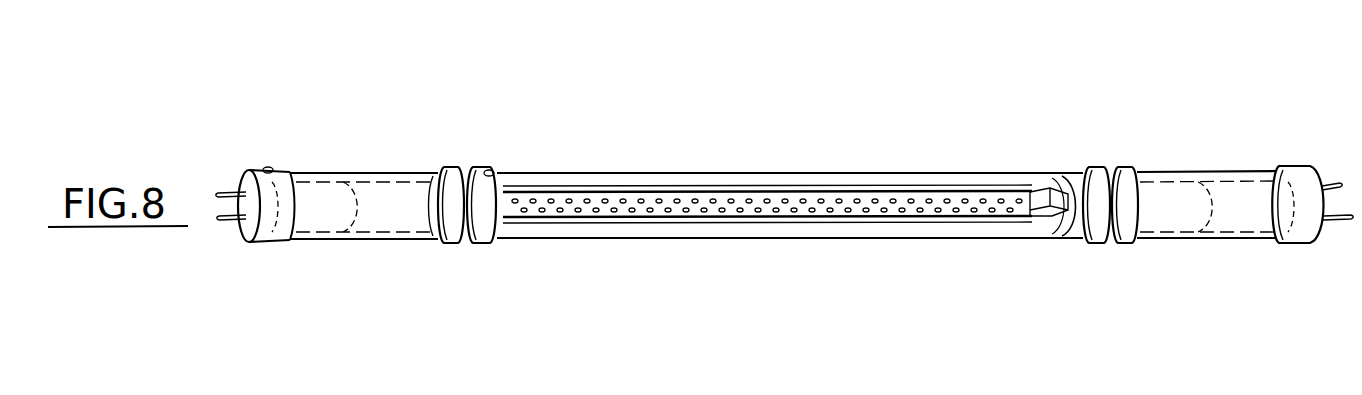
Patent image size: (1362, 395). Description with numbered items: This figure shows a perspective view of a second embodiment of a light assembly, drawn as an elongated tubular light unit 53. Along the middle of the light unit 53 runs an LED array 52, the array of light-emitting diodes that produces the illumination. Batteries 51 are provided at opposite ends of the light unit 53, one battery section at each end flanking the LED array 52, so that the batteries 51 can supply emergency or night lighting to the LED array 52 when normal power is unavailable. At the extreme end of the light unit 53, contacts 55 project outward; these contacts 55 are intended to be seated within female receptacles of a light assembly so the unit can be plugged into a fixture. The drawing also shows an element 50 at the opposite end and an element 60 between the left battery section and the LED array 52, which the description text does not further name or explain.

The left end cap with pins 50 is at (272, 167).
The batteries 51 is at (395, 195).
The LED array 52 is at (902, 199).
The light unit 53 is at (762, 241).
The contacts 55 is at (1334, 183).
The clamp rings 60 is at (491, 168).